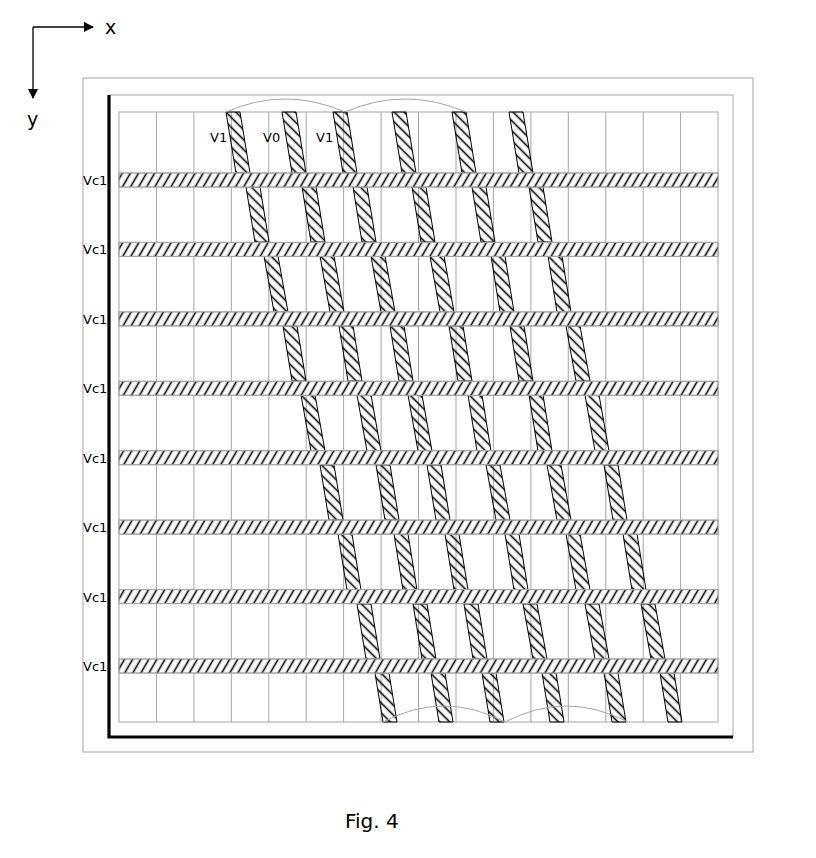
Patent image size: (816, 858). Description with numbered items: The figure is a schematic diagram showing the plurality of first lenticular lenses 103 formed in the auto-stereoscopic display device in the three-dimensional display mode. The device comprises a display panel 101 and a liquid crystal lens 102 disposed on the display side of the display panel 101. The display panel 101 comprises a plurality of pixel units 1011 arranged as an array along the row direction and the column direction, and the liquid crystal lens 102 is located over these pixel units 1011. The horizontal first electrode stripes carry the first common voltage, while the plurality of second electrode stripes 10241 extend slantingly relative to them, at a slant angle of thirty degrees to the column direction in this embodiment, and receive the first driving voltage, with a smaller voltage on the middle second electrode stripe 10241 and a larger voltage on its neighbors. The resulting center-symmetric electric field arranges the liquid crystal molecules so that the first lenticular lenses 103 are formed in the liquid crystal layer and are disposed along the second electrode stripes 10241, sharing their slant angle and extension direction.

The display panel 101 is at (545, 78).
The pixel unit 1011 is at (618, 145).
The liquid crystal lens 102 is at (153, 94).
The first lenticular lens 103 is at (344, 109).
The second electrode stripe 10241 is at (225, 111).